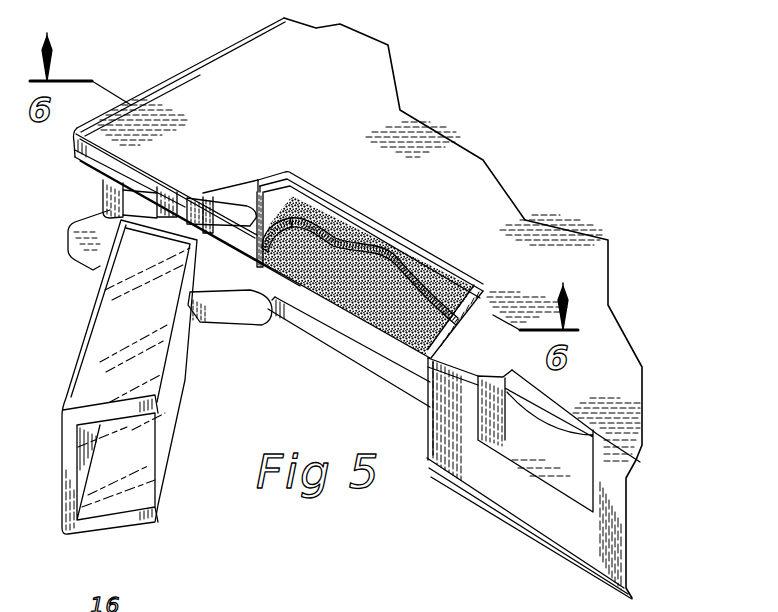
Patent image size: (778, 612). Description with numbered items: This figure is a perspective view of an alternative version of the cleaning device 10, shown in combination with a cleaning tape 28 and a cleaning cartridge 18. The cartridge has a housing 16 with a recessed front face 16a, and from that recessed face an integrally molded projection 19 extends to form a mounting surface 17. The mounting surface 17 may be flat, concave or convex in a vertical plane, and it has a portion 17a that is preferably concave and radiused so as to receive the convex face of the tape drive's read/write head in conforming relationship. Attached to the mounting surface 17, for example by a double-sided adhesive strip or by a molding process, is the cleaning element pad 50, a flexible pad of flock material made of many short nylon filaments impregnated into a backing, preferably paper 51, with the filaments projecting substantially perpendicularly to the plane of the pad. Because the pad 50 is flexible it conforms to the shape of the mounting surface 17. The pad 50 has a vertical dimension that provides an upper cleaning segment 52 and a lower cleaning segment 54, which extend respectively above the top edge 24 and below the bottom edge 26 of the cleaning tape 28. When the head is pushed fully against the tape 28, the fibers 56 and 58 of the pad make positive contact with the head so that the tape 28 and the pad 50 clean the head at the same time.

The cleaning device 10 is at (182, 45).
The housing 16 is at (204, 92).
The recessed front face 16a is at (381, 242).
The mounting surface 17 is at (265, 200).
The concave portion 17a is at (348, 230).
The cleaning cartridge 18 is at (488, 157).
The integrally molded projection 19 is at (333, 205).
The top edge of cleaning tape 24 is at (248, 203).
The bottom edge of cleaning tape 26 is at (270, 323).
The cleaning tape 28 is at (280, 350).
The cleaning element pad 50 is at (321, 203).
The paper backing 51 is at (303, 196).
The upper cleaning segment 52 is at (400, 290).
The lower cleaning segment 54 is at (302, 331).
The fibers 56 is at (432, 305).
The fibers 58 is at (395, 360).